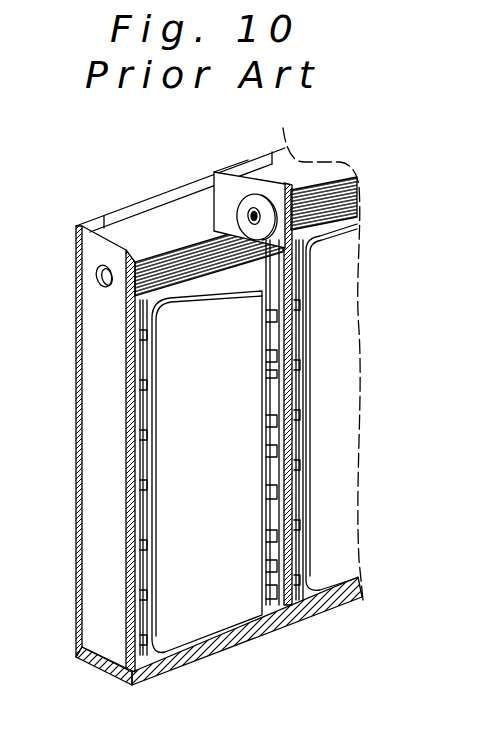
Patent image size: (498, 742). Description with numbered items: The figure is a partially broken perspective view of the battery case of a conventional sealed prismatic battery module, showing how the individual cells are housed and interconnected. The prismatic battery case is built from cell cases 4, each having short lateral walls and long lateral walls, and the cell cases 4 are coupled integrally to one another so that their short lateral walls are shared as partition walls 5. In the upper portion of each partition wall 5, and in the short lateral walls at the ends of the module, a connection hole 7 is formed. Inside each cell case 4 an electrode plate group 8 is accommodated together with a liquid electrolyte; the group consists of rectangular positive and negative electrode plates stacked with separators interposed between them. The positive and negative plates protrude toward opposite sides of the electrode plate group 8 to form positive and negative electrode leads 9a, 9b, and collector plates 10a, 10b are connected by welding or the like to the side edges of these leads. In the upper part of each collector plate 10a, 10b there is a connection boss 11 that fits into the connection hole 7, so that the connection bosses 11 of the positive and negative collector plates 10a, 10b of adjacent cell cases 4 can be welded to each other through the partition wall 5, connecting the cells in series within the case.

The cell case 4 is at (166, 239).
The partition wall 5 is at (128, 468).
The connection hole 7 is at (100, 281).
The electrode plate group 8 is at (224, 552).
The positive electrode lead 9a is at (146, 447).
The negative electrode lead 9b is at (267, 375).
The positive collector plate 10a is at (141, 437).
The negative collector plate 10b is at (272, 350).
The connection boss 11 is at (248, 212).